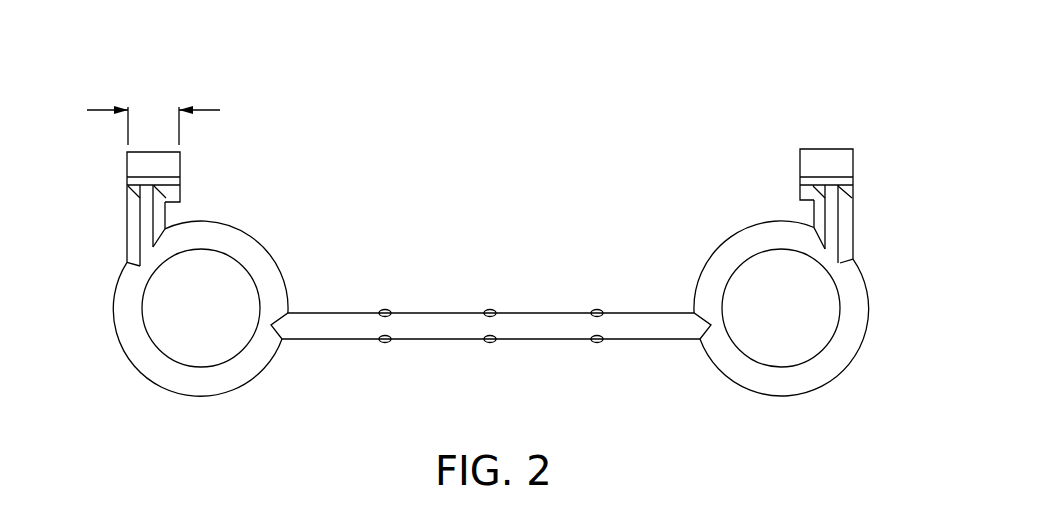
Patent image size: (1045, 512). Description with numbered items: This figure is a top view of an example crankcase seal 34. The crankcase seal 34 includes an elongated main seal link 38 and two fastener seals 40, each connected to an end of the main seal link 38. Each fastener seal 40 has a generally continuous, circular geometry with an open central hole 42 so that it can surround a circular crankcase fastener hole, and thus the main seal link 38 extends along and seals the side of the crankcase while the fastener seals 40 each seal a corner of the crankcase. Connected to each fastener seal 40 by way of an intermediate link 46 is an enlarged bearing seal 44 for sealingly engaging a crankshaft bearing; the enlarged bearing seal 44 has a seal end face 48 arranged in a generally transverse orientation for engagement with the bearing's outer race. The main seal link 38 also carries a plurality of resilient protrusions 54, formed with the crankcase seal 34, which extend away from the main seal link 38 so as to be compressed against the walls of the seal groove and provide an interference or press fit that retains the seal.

The crankcase seal 34 is at (592, 123).
The main seal link 38 is at (318, 333).
The fastener seal 40 is at (142, 353).
The open central hole 42 is at (157, 311).
The enlarged bearing seal 44 is at (133, 165).
The intermediate link 46 is at (133, 220).
The seal end face 48 is at (150, 147).
The resilient protrusion 54 is at (597, 308).